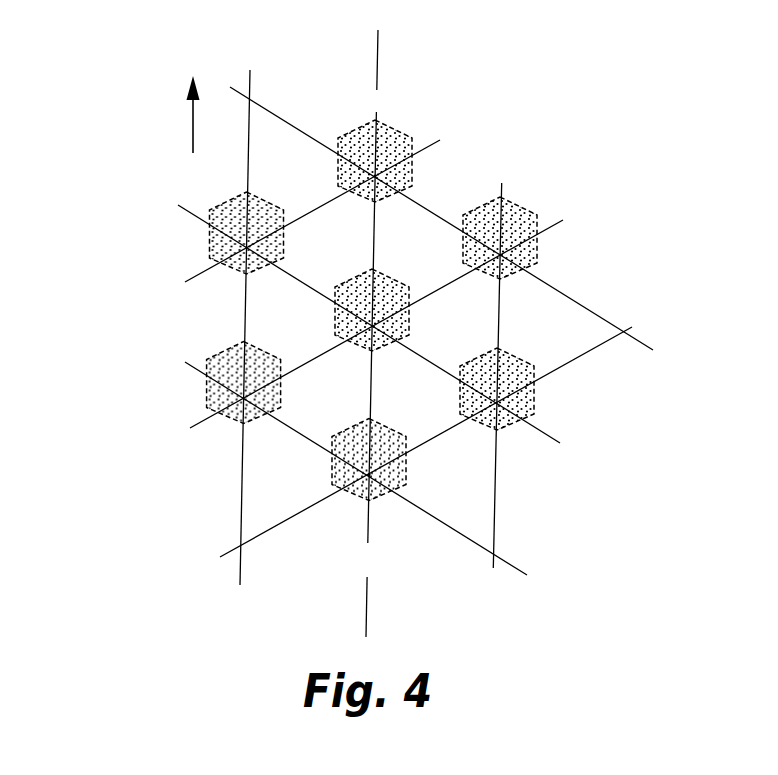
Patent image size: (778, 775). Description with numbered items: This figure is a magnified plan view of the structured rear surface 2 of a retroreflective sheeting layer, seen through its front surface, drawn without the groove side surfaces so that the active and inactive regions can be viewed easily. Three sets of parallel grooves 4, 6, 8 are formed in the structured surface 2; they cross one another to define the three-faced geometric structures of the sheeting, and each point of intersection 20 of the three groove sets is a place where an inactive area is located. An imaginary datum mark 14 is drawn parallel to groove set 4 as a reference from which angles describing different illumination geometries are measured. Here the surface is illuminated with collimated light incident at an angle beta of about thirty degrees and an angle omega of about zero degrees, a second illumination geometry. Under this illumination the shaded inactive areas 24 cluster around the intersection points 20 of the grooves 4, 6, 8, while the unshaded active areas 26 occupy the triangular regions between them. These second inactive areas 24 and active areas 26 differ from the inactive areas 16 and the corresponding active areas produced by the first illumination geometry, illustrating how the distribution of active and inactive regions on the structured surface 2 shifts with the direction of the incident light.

The structured rear surface 2 is at (138, 190).
The groove set 4 is at (241, 568).
The groove set 6 is at (655, 350).
The groove set 8 is at (441, 139).
The imaginary datum mark 14 is at (192, 122).
The inactive areas 16 is at (518, 212).
The point of intersection 20 is at (370, 185).
The inactive areas 24 is at (393, 310).
The active areas 26 is at (319, 263).